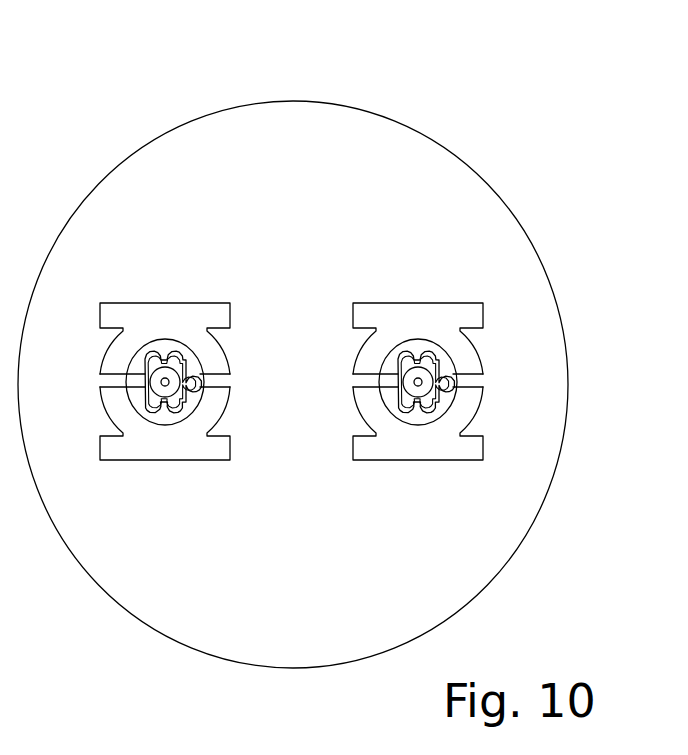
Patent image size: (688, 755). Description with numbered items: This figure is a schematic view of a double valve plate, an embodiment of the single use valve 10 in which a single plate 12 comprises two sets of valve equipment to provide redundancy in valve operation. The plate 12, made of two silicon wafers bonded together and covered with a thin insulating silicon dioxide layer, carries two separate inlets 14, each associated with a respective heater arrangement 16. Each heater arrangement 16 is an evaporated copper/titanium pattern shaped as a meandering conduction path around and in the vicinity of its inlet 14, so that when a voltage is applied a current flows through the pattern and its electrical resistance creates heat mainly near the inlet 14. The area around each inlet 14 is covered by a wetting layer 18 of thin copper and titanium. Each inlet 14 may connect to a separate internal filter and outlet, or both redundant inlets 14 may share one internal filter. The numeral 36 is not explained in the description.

The single use valve 10 is at (316, 334).
The plate 12 is at (372, 112).
The inlet 14 is at (161, 385).
The heater arrangement 16 is at (102, 306).
The wetting layer 18 is at (181, 368).
The sheet reference 36 is at (138, 16).